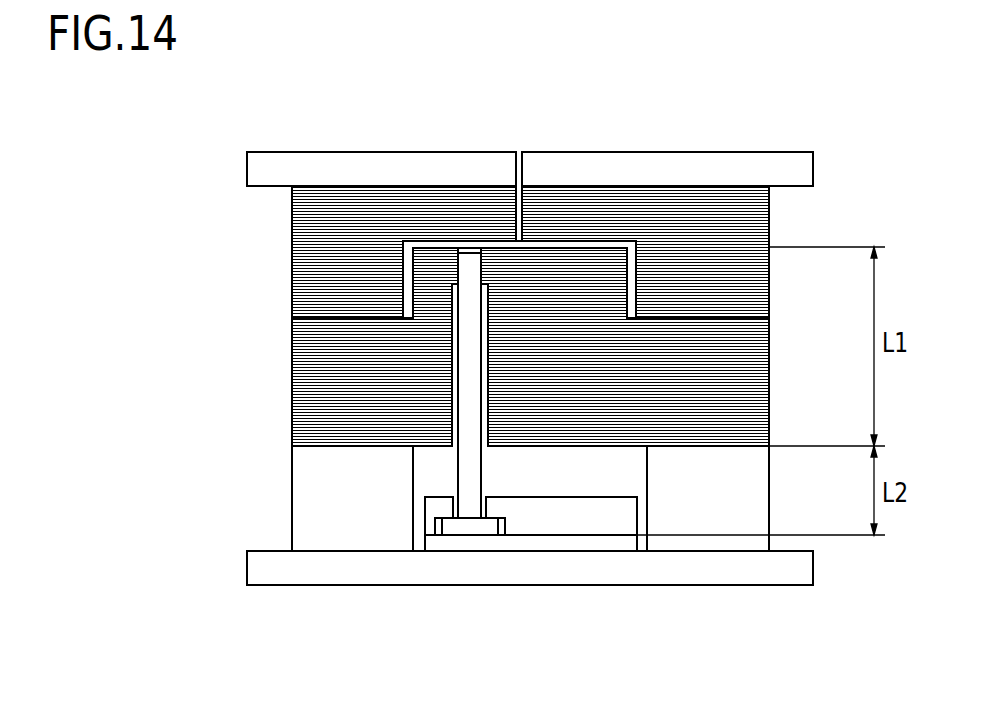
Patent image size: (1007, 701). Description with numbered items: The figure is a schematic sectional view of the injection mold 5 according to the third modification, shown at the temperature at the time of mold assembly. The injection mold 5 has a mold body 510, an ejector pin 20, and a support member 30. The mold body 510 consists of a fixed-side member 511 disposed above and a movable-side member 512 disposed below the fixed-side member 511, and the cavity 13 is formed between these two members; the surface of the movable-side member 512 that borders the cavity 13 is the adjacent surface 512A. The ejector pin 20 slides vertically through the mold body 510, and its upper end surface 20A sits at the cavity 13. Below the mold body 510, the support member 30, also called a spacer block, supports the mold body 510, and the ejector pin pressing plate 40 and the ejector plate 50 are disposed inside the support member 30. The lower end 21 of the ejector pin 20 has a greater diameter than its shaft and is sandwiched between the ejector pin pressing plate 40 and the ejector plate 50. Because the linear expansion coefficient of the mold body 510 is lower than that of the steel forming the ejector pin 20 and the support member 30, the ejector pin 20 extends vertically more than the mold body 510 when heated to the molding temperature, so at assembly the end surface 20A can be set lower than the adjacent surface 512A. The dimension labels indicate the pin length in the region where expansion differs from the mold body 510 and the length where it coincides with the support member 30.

The injection mold 5 is at (211, 109).
The cavity 13 is at (402, 246).
The ejector pin 20 is at (470, 413).
The end surface 20A is at (462, 252).
The lower end 21 is at (469, 526).
The support member 30 is at (297, 508).
The ejector pin pressing plate 40 is at (559, 522).
The ejector plate 50 is at (522, 542).
The mold body 510 is at (463, 316).
The fixed-side member 511 is at (293, 297).
The movable-side member 512 is at (215, 282).
The adjacent surface 512A is at (494, 243).